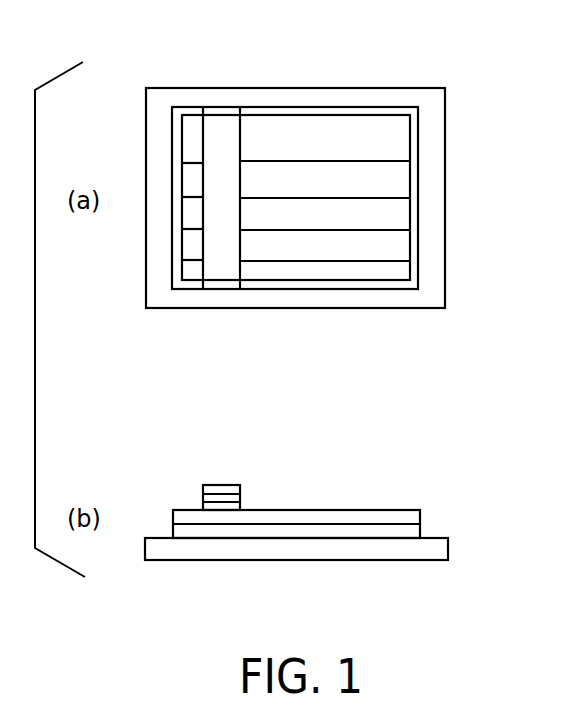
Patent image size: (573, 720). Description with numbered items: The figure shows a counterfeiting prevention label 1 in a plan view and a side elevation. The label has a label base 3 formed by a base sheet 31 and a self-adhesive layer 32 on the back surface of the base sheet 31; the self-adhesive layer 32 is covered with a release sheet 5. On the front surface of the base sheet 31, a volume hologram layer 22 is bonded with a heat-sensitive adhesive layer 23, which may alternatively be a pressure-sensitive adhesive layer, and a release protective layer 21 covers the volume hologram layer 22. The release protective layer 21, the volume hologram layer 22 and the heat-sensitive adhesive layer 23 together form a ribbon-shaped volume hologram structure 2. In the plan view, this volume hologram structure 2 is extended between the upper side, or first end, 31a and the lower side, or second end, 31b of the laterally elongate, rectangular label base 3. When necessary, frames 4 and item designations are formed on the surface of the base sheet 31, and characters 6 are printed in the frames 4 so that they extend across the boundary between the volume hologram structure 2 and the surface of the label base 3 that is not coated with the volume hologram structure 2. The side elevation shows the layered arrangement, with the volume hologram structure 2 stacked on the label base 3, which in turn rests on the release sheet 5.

The counterfeiting prevention label 1 is at (367, 72).
The volume hologram structure 2 is at (219, 282).
The label base 3 is at (420, 118).
The frames 4 is at (373, 195).
The release sheet 5 is at (430, 218).
The characters 6 is at (348, 225).
The release protective layer 21 is at (231, 485).
The volume hologram layer 22 is at (242, 500).
The heat-sensitive adhesive layer 23 is at (243, 508).
The base sheet 31 is at (411, 518).
The self-adhesive layer 32 is at (411, 532).
The upper side (first end) 31a is at (290, 104).
The lower side (second end) 31b is at (297, 290).